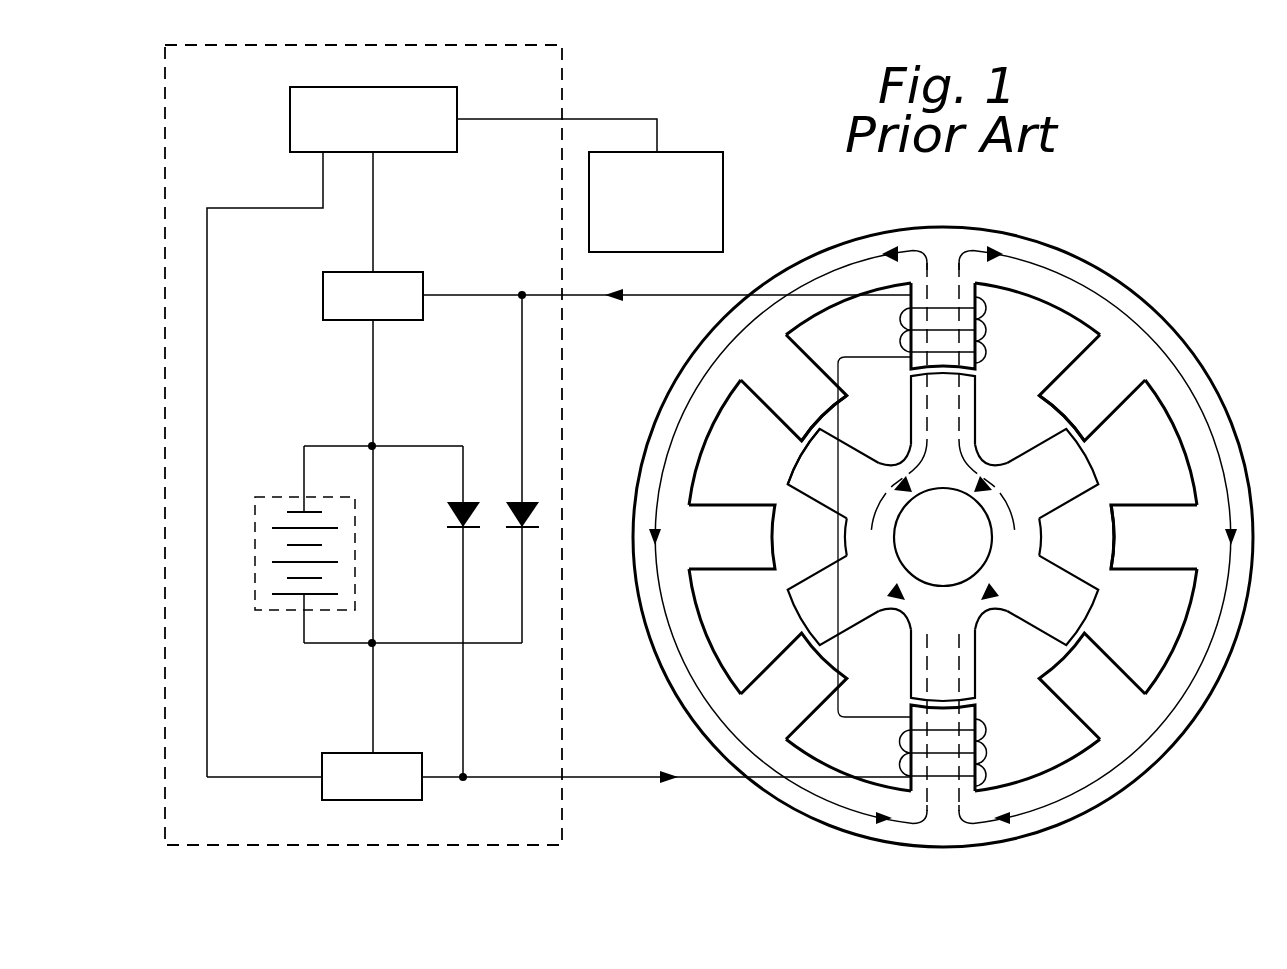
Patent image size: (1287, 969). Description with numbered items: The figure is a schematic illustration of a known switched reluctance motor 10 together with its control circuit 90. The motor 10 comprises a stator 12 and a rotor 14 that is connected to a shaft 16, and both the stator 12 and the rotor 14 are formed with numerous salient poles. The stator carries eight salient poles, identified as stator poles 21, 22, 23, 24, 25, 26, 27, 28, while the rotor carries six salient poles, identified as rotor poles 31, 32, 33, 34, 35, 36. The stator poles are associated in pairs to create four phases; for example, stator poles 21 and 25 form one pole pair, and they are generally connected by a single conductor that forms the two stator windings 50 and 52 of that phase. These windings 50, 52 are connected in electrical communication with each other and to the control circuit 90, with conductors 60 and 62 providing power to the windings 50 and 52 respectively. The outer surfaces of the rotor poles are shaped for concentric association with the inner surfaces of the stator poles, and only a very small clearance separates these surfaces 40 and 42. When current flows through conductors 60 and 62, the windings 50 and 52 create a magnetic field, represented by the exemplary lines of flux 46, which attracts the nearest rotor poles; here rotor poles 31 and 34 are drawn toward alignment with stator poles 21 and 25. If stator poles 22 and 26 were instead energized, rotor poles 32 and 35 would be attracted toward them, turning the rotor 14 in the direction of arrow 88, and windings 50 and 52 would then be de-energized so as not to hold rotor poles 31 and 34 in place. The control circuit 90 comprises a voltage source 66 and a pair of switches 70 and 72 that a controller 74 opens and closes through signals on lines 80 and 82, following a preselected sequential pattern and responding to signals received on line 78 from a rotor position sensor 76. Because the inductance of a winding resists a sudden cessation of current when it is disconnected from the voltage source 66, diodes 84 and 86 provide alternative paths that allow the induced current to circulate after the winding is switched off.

The switched reluctance motor 10 is at (1076, 204).
The stator 12 is at (1132, 296).
The rotor 14 is at (967, 537).
The shaft 16 is at (958, 550).
The stator pole 21 is at (906, 322).
The stator pole 22 is at (1107, 402).
The stator pole 23 is at (1164, 548).
The stator pole 24 is at (1102, 694).
The stator pole 25 is at (906, 745).
The stator pole 26 is at (808, 694).
The stator pole 27 is at (745, 548).
The stator pole 28 is at (810, 402).
The rotor pole 31 is at (912, 393).
The rotor pole 32 is at (1088, 456).
The rotor pole 33 is at (1073, 616).
The rotor pole 34 is at (972, 670).
The rotor pole 35 is at (827, 610).
The rotor pole 36 is at (827, 485).
The pole surface 40 is at (838, 420).
The pole surface 42 is at (792, 467).
The lines of flux 46 is at (660, 615).
The stator winding 50 is at (985, 330).
The stator winding 52 is at (985, 722).
The conductor 60 is at (680, 300).
The conductor 62 is at (725, 780).
The voltage source 66 is at (285, 497).
The switch 70 is at (350, 272).
The switch 72 is at (340, 753).
The controller 74 is at (290, 110).
The rotor position sensor 76 is at (723, 182).
The line 78 is at (610, 119).
The line 80 is at (373, 212).
The line 82 is at (207, 262).
The diode 84 is at (450, 515).
The diode 86 is at (515, 530).
The arrow 88 is at (1021, 486).
The control circuit 90 is at (165, 160).